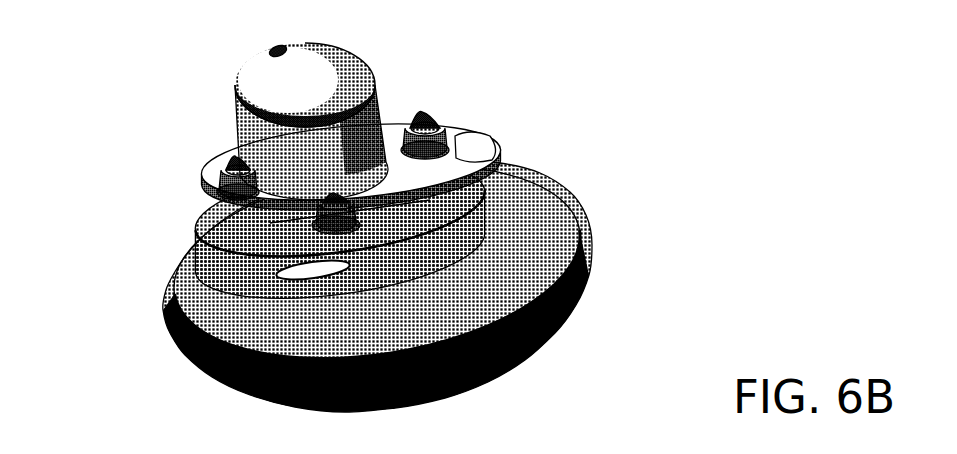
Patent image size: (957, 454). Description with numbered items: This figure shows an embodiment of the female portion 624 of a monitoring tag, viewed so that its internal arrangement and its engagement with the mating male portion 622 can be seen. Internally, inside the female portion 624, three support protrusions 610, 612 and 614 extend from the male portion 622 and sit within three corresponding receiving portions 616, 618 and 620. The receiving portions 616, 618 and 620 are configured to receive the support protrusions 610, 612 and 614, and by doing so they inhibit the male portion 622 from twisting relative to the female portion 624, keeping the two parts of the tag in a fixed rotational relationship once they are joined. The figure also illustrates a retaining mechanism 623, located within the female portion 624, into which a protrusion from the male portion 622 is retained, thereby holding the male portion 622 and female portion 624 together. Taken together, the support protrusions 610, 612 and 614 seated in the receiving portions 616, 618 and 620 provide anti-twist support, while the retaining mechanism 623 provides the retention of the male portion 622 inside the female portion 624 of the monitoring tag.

The support protrusion 610 is at (422, 112).
The support protrusion 612 is at (233, 157).
The support protrusion 614 is at (320, 193).
The receiving portion 616 is at (448, 130).
The receiving portion 618 is at (227, 185).
The receiving portion 620 is at (317, 225).
The male portion 622 is at (583, 275).
The retaining mechanism 623 is at (238, 102).
The female portion 624 is at (477, 148).